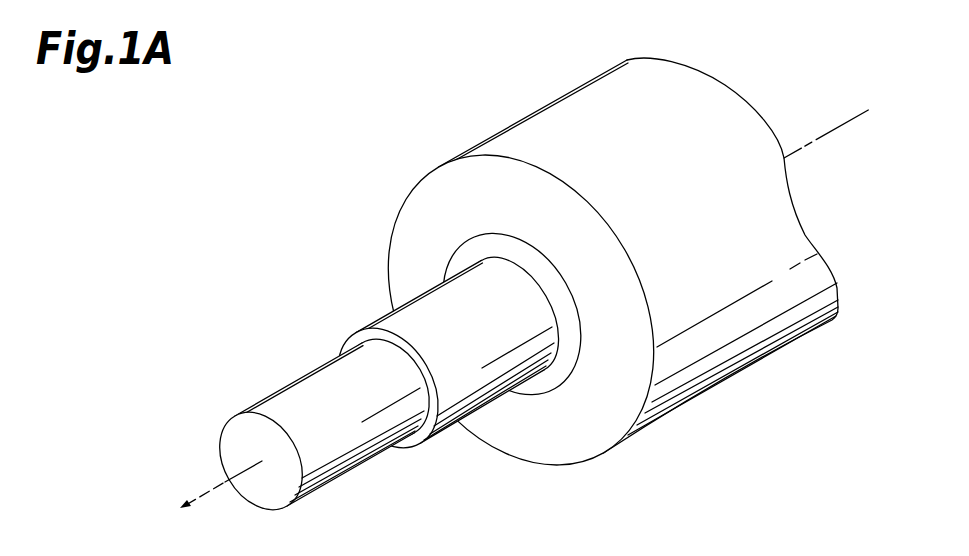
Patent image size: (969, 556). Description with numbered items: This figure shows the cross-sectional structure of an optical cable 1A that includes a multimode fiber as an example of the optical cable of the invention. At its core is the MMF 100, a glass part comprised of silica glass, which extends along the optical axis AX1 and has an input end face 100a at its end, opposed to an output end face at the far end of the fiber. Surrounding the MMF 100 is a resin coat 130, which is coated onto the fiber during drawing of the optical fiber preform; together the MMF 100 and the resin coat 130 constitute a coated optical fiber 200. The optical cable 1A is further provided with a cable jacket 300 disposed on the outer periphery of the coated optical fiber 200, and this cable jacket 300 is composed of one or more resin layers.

The optical cable 1A is at (497, 276).
The MMF 100 is at (290, 392).
The input end face 100a is at (231, 433).
The resin coat 130 is at (405, 330).
The coated optical fiber 200 is at (344, 375).
The cable jacket 300 is at (480, 250).
The optical axis AX1 is at (497, 315).